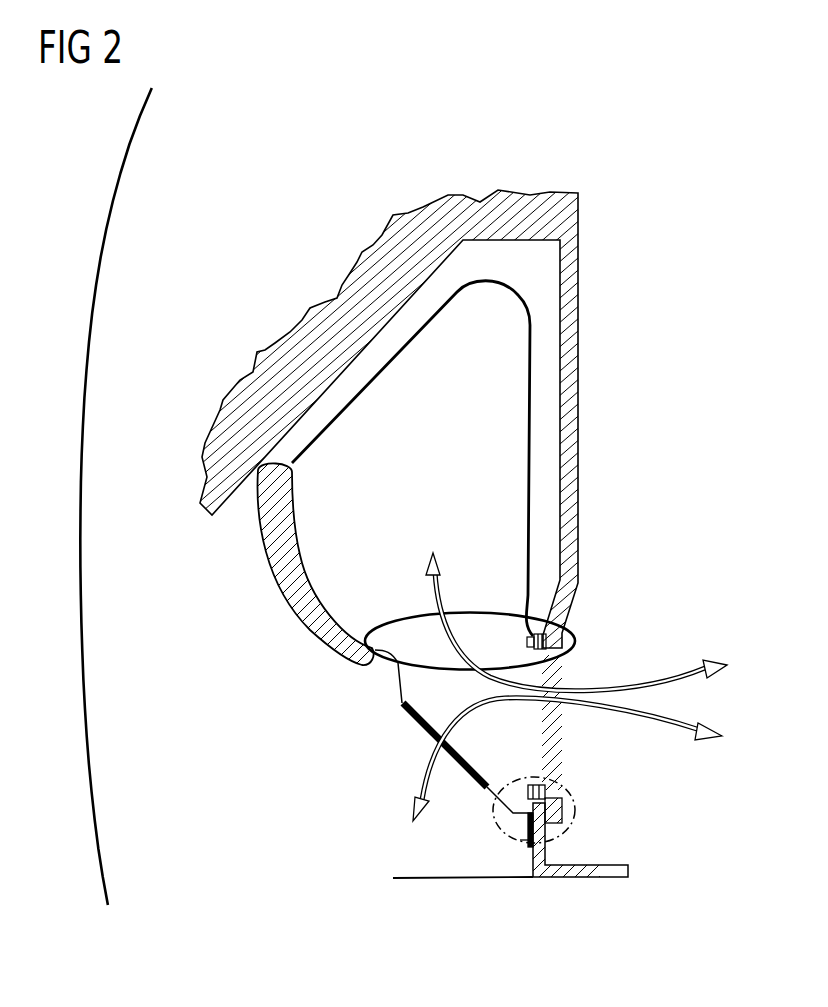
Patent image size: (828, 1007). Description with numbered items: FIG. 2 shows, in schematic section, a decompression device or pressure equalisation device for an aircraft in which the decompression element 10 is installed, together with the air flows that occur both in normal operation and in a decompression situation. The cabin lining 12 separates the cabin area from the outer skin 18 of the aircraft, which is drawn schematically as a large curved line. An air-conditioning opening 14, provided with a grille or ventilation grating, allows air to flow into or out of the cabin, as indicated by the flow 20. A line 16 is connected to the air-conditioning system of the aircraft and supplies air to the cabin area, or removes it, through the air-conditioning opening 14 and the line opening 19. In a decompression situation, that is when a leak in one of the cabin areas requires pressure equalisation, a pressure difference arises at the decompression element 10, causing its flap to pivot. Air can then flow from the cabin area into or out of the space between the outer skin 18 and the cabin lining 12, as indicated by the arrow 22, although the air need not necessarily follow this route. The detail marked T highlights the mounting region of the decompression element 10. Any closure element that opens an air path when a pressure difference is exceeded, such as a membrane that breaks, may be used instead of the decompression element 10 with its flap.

The decompression element 10 is at (410, 745).
The cabin lining 12 is at (570, 450).
The air-conditioning opening 14 is at (578, 744).
The line 16 is at (515, 348).
The outer skin 18 is at (99, 268).
The line opening 19 is at (573, 637).
The air flow 20 is at (445, 592).
The arrow 22 is at (420, 782).
The mounting detail T is at (497, 827).